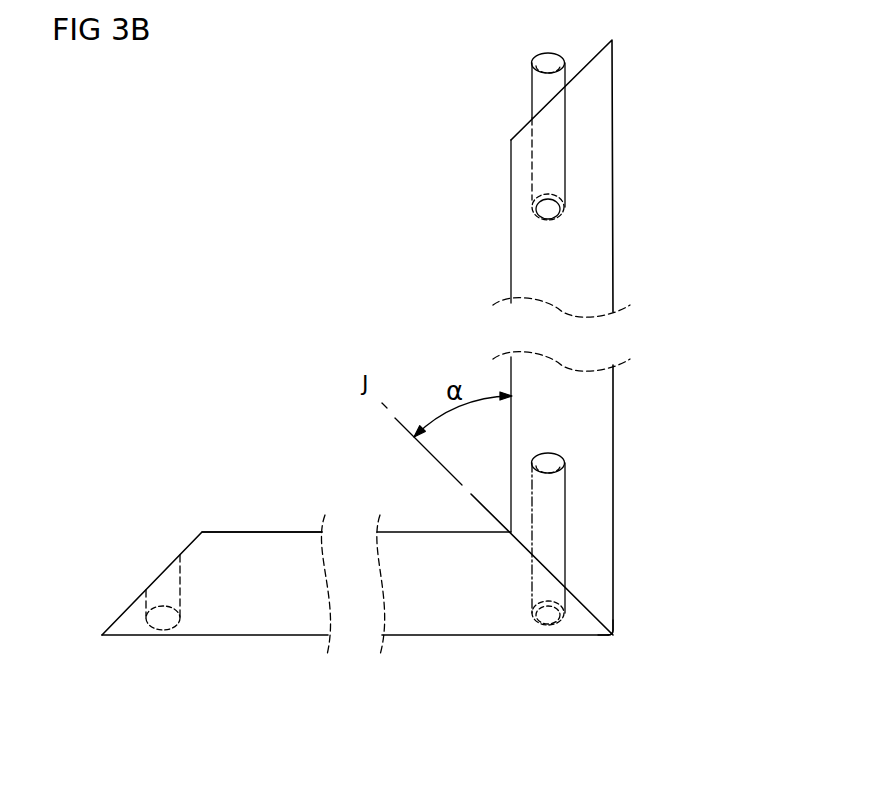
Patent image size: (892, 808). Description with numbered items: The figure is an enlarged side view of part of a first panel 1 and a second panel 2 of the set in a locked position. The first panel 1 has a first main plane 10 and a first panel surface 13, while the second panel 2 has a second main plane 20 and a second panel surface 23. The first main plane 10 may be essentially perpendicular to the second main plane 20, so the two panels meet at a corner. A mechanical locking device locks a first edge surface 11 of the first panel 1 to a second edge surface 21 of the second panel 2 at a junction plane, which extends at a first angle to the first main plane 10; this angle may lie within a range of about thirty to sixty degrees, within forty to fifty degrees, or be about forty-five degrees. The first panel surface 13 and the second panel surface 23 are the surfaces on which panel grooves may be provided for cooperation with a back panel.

The first panel 1 is at (614, 162).
The first main plane 10 is at (512, 179).
The first panel surface 13 is at (512, 253).
The first edge surface 11 is at (588, 609).
The second panel 2 is at (478, 635).
The second main plane 20 is at (225, 532).
The second panel surface 23 is at (285, 532).
The second edge surface 21 is at (598, 622).